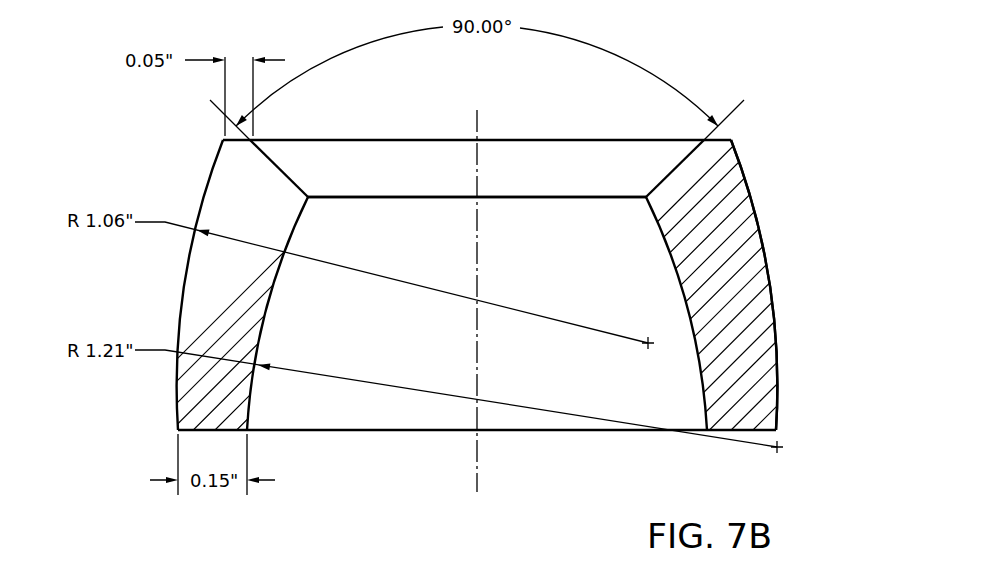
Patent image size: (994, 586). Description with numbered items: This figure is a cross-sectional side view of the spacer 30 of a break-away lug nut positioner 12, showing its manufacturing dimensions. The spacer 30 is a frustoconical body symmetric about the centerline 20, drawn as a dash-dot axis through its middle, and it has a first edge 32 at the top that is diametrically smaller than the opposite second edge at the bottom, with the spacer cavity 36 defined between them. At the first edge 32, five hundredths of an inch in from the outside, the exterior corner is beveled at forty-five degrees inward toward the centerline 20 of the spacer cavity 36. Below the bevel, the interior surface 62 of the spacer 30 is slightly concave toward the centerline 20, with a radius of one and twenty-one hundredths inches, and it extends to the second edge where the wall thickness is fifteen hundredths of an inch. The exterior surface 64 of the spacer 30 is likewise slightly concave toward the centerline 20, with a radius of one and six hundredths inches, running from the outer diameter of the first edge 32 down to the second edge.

The break-away lug nut positioner 12 is at (550, 291).
The centerline 20 is at (478, 462).
The spacer 30 is at (768, 245).
The first edge 32 is at (232, 137).
The spacer cavity 36 is at (590, 212).
The interior surface 62 is at (260, 340).
The exterior surface 64 is at (772, 287).